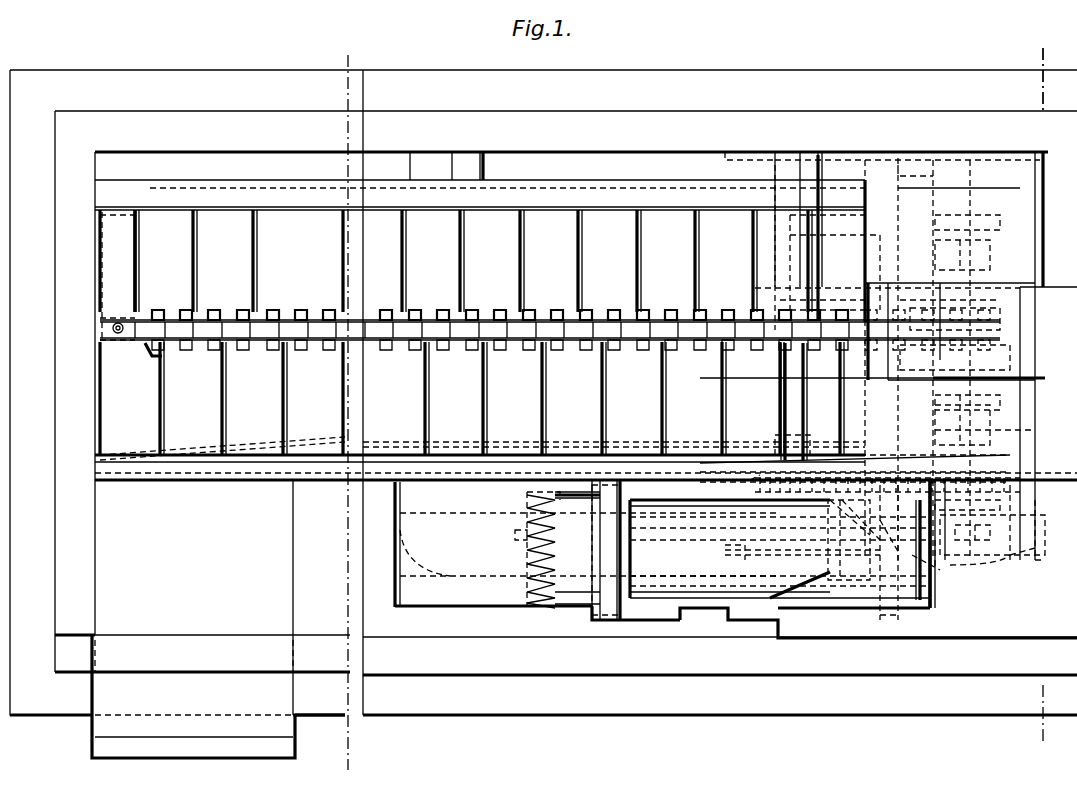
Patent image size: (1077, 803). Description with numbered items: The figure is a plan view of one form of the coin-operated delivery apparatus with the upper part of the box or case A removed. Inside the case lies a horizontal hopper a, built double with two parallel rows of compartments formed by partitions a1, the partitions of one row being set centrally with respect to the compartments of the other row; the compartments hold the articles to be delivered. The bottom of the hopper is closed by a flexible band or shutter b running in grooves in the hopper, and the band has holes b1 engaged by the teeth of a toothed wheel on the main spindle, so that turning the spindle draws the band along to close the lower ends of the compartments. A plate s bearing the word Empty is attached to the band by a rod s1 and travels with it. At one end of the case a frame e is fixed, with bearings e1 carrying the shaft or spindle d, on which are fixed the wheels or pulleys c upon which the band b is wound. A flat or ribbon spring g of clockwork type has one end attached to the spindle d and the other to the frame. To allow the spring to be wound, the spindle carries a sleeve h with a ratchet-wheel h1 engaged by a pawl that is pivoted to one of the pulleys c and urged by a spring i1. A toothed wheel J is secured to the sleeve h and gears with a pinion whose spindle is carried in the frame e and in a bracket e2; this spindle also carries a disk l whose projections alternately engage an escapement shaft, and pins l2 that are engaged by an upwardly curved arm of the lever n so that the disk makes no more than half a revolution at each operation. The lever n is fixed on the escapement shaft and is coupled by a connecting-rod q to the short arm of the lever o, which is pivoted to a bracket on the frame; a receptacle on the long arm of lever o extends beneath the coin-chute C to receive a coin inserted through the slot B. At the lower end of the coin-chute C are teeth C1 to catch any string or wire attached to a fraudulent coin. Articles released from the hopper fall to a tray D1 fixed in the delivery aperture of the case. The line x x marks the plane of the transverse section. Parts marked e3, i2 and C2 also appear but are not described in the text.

The box or case A is at (543, 409).
The hopper a is at (480, 393).
The partitions a1 is at (164, 390).
The flexible band or shutter b is at (550, 368).
The holes in flexible band b1 is at (407, 312).
The plate bearing the word Empty s is at (140, 273).
The rod s1 is at (137, 342).
The connecting-rod q is at (845, 165).
The frame e is at (950, 158).
The bearings e1 is at (893, 160).
The bracket e2 is at (850, 464).
The lever link e3 is at (865, 552).
The wheels or pulleys c is at (967, 222).
The shaft or spindle d is at (867, 297).
The sleeve h is at (887, 474).
The ratchet-wheel h1 is at (955, 367).
The pawl spring i1 is at (803, 442).
The pawl arm i2 is at (930, 552).
The disk l is at (972, 520).
The pins or projections l2 is at (849, 540).
The toothed wheel J is at (1031, 524).
The arm or lever n is at (985, 548).
The flat or ribbon spring g is at (992, 535).
The coin-chute C is at (720, 597).
The teeth C1 is at (522, 527).
The spring seat C2 is at (529, 529).
The lever o is at (780, 549).
The slot or slit B is at (202, 597).
The tray D1 is at (218, 696).
The section line x x is at (1041, 396).